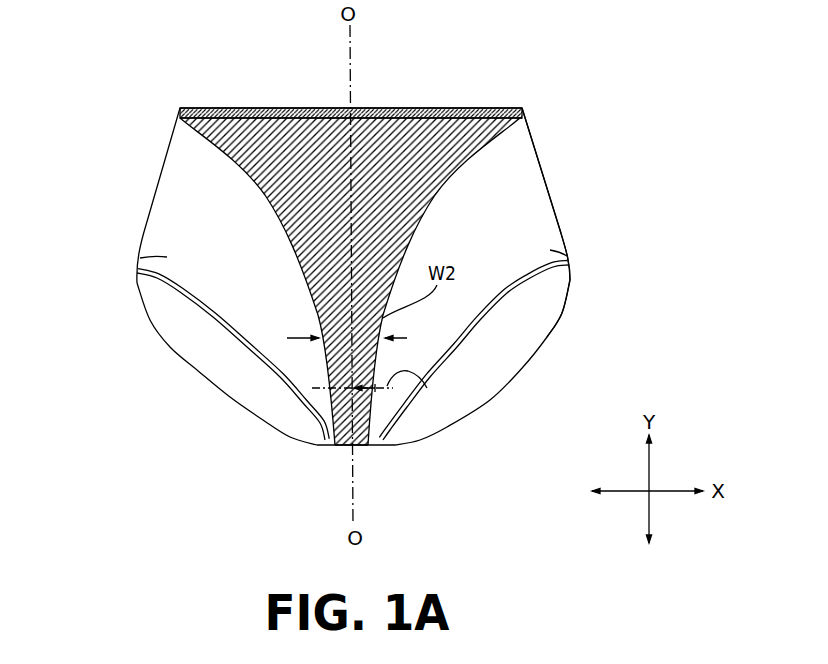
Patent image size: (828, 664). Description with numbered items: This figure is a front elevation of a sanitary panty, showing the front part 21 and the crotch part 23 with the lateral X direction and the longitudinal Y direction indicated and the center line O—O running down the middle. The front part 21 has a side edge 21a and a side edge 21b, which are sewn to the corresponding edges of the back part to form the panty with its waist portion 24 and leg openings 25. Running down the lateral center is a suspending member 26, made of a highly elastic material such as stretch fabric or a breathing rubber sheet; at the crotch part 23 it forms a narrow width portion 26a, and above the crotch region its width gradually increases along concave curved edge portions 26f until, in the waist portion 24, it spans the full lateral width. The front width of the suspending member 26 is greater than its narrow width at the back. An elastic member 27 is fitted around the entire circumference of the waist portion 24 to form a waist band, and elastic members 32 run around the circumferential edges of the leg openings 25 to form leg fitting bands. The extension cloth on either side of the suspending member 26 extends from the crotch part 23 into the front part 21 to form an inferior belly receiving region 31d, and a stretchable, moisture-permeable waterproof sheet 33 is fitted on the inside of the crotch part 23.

The front part 21 is at (497, 226).
The side edge of the front part 21a is at (542, 152).
The side edge of the front part 21b is at (157, 180).
The crotch part 23 is at (328, 452).
The waist portion 24 is at (423, 102).
The leg openings 25 is at (233, 360).
The suspending member 26 is at (283, 235).
The narrow width portion 26a is at (363, 450).
The concave curved edge portions 26f is at (257, 197).
The elastic member 27 is at (302, 107).
The inferior belly receiving region 31d is at (137, 263).
The elastic members 32 is at (220, 307).
The waterproof sheet 33 is at (422, 392).